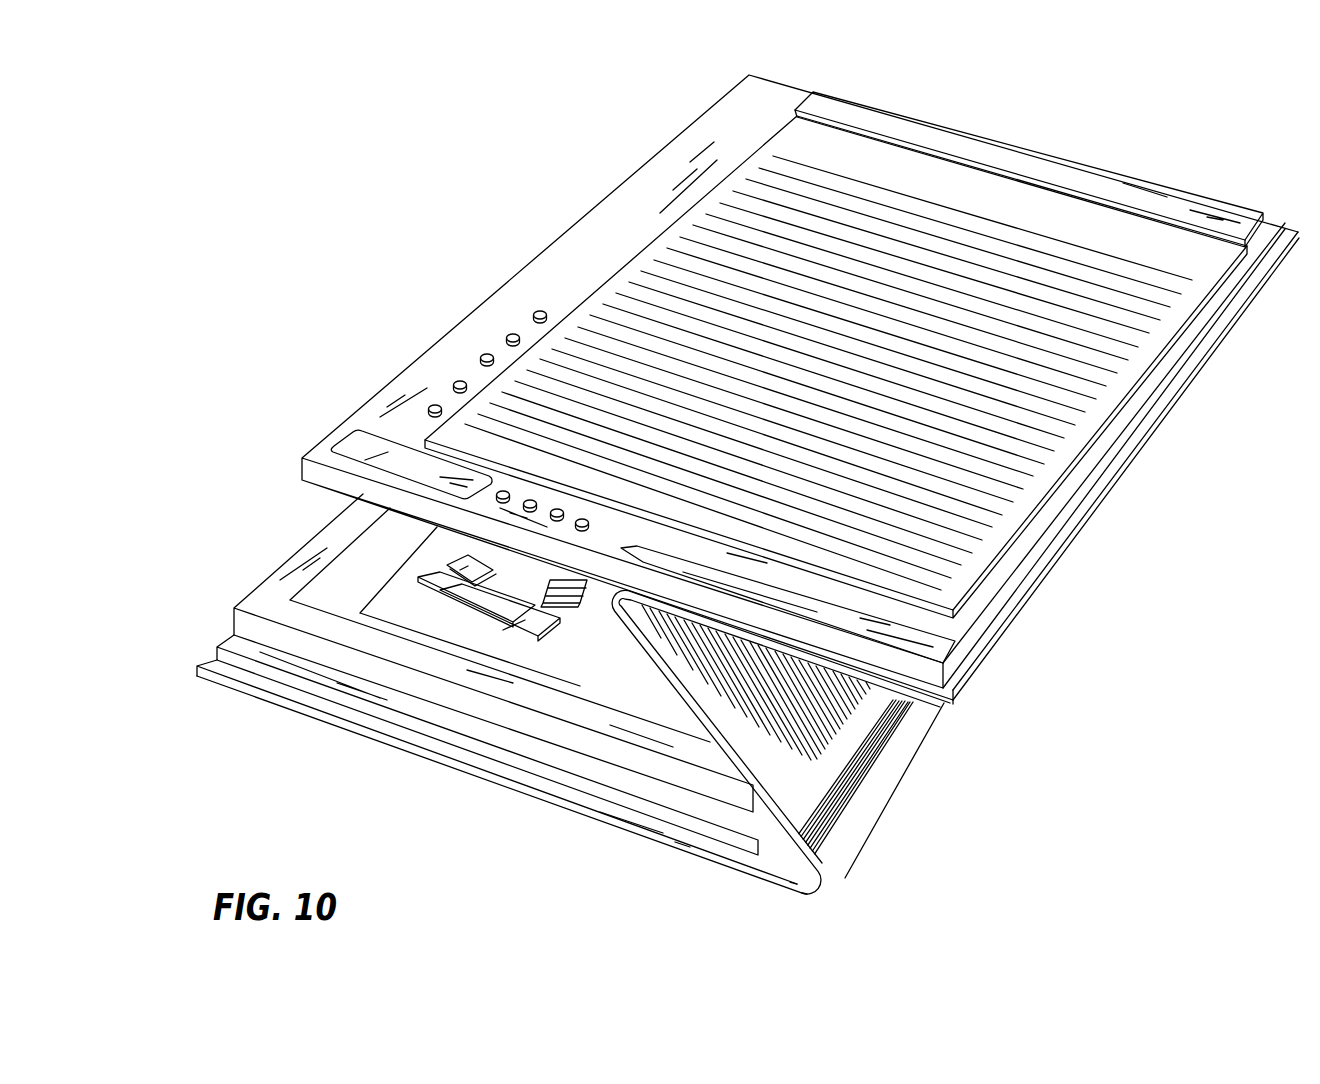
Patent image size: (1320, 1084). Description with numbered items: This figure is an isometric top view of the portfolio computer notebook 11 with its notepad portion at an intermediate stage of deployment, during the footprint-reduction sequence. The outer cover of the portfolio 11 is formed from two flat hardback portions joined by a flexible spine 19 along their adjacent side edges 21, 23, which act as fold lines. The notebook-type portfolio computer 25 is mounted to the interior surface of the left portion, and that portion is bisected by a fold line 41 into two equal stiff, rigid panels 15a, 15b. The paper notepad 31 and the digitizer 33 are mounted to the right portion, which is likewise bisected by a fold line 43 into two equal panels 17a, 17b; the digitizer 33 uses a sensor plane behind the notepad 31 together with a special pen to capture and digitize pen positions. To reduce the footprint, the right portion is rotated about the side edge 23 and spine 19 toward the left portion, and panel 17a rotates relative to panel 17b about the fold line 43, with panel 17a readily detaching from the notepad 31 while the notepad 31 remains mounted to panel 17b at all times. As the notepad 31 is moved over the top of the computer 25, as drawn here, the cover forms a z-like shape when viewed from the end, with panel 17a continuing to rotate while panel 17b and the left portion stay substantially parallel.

The portfolio computer notebook 11 is at (440, 239).
The notebook-type portfolio computer 25 is at (278, 528).
The paper notepad 31 is at (1082, 400).
The digitizer 33 is at (945, 686).
The fold line 43 is at (605, 598).
The panel 15a is at (303, 713).
The panel 15b is at (667, 853).
The fold line 41 is at (487, 785).
The side edge 23 is at (820, 866).
The side edge 21 is at (786, 896).
The flexible spine 19 is at (808, 896).
The panel 17a is at (816, 798).
The panel 17b is at (932, 706).